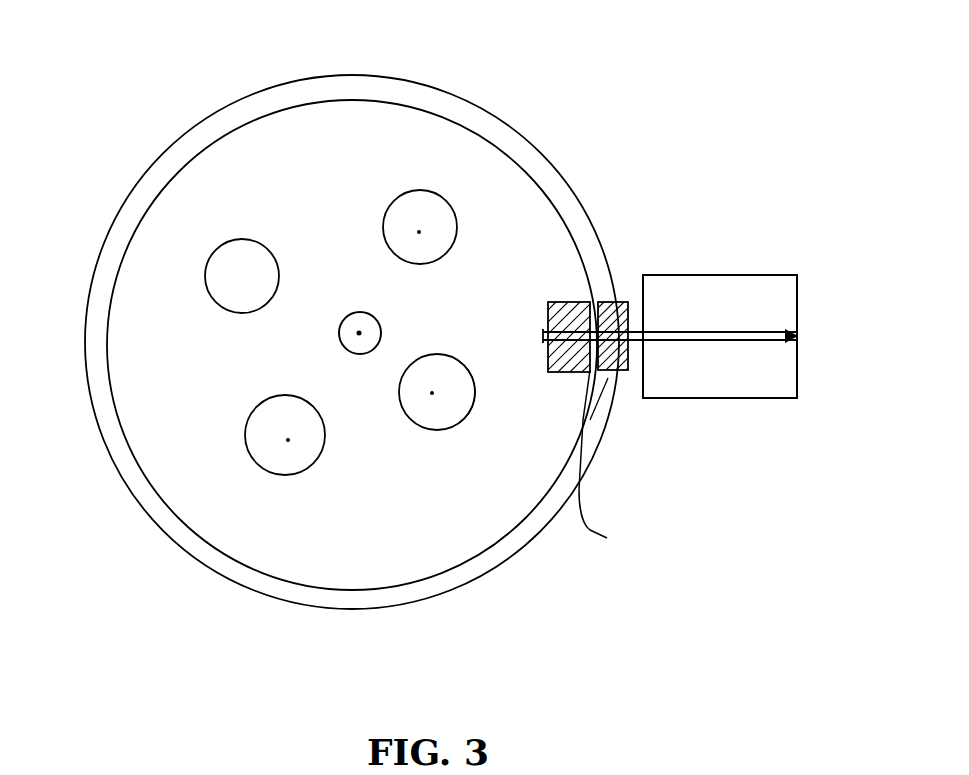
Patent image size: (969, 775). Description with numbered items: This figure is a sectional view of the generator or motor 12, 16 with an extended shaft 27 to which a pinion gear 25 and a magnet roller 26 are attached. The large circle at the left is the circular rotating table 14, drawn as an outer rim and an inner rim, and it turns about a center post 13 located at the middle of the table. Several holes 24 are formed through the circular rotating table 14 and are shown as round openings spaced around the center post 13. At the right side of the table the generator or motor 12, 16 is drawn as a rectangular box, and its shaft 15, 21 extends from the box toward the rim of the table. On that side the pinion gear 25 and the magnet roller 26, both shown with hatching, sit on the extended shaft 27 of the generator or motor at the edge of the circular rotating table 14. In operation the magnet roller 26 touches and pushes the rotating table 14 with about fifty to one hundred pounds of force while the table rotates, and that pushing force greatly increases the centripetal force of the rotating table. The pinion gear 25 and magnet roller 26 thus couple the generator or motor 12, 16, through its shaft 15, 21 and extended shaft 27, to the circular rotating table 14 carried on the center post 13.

The center post 13 is at (338, 349).
The circular rotating table 14 is at (530, 175).
The hole 24 is at (233, 270).
The pinion gear 25 is at (610, 297).
The magnet roller 26 is at (561, 302).
The extended shaft 27 is at (607, 538).
The shaft 15 is at (698, 240).
The shaft 21 is at (728, 330).
The generator or motor 12 is at (720, 409).
The generator or motor 16 is at (720, 398).